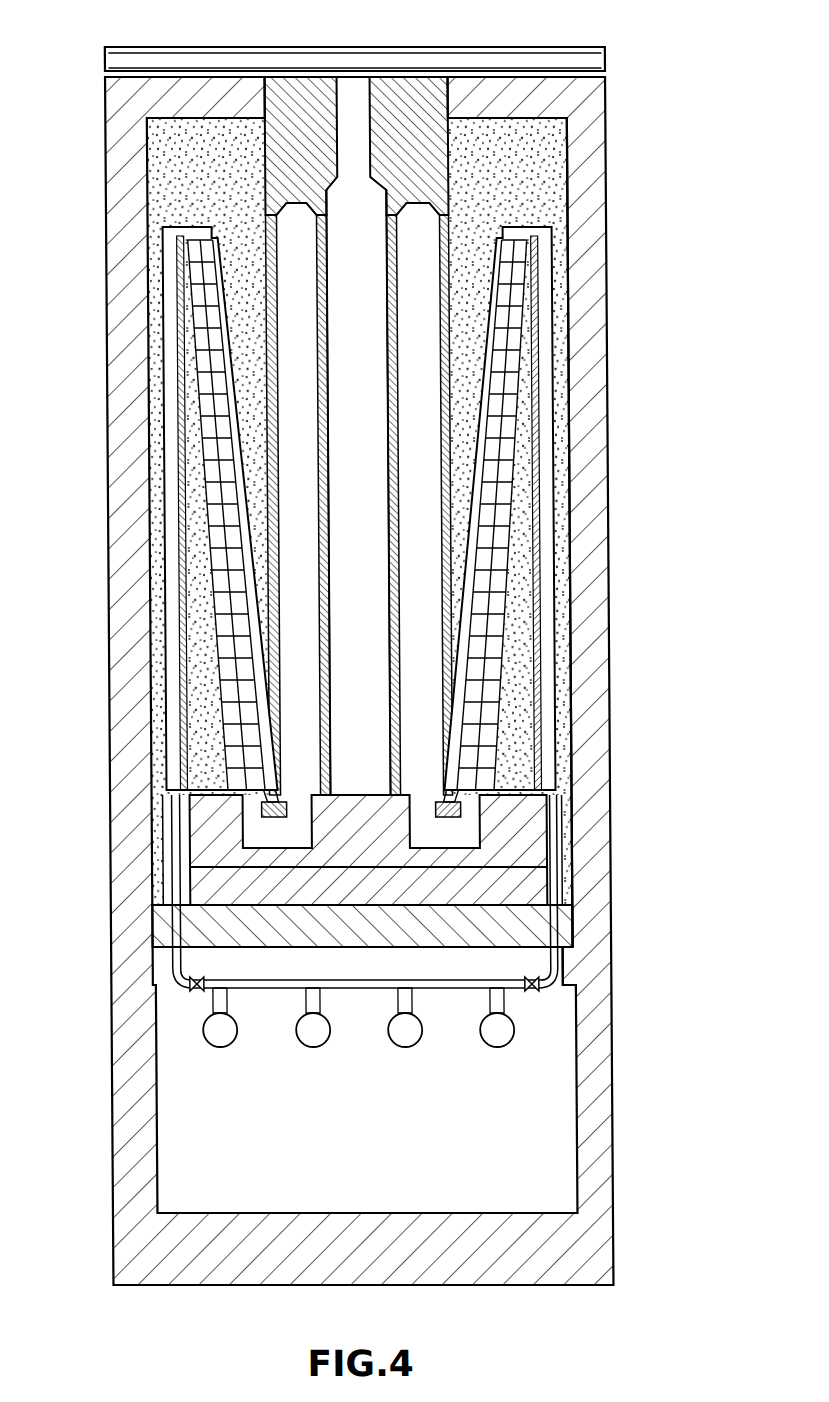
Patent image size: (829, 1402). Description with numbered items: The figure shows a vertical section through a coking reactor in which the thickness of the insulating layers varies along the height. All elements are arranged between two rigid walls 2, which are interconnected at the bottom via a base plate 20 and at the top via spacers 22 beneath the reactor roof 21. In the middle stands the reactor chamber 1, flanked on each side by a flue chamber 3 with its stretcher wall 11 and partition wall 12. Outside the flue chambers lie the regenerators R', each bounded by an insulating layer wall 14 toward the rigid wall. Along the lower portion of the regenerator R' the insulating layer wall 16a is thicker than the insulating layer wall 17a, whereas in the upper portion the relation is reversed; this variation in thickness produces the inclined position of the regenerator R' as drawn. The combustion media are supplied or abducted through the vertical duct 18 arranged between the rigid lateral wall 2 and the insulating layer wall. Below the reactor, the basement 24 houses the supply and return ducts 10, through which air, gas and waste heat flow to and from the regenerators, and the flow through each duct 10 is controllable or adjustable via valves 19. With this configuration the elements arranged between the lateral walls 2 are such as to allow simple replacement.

The reactor chamber 1 is at (365, 421).
The rigid walls 2 is at (118, 297).
The flue chamber 3 is at (302, 361).
The supply- and return ducts 10 is at (558, 962).
The stretcher wall 11 is at (319, 557).
The partition wall 12 is at (470, 366).
The insulating layer wall 14 is at (566, 622).
The insulating layer wall 16a is at (510, 590).
The insulating layer wall 17a is at (476, 298).
The vertical duct 18 is at (546, 507).
The valves 19 is at (523, 992).
The base plate 20 is at (171, 1260).
The reactor roof 21 is at (528, 85).
The spacers 22 is at (479, 47).
The basement 24 is at (372, 1156).
The regenerator R' is at (447, 514).